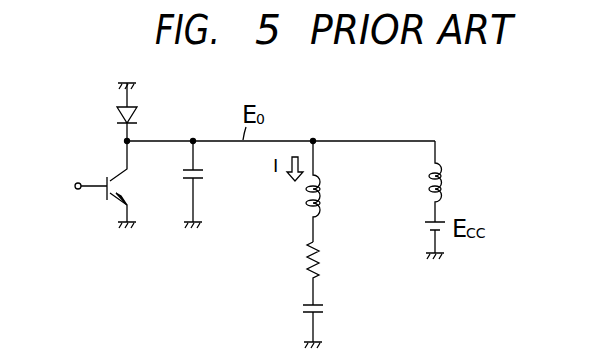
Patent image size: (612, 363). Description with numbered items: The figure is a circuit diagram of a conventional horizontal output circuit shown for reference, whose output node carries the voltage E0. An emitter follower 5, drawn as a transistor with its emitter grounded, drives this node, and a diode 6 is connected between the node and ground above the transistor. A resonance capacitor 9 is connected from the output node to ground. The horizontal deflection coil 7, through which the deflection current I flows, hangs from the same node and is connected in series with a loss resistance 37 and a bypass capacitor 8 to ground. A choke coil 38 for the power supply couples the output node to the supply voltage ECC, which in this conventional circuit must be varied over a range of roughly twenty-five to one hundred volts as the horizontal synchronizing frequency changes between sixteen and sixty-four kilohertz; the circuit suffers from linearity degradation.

The emitter follower 5 is at (110, 207).
The diode 6 is at (143, 119).
The horizontal deflection coil 7 is at (327, 198).
The bypass capacitor 8 is at (327, 309).
The resonance capacitor 9 is at (207, 178).
The loss resistance 37 is at (323, 262).
The choke coil 38 is at (449, 181).